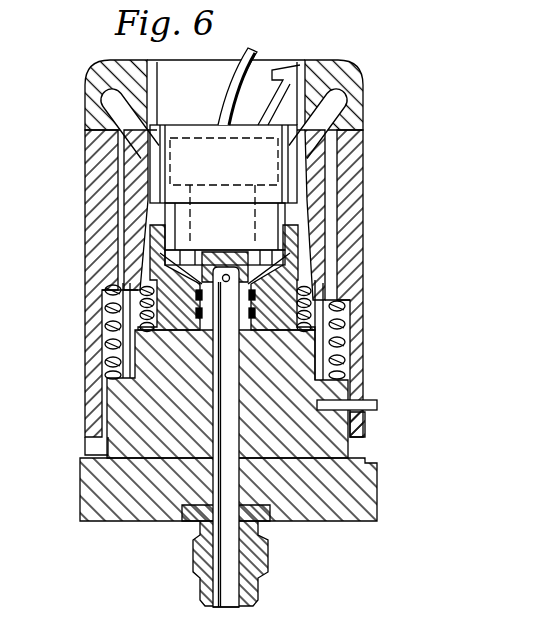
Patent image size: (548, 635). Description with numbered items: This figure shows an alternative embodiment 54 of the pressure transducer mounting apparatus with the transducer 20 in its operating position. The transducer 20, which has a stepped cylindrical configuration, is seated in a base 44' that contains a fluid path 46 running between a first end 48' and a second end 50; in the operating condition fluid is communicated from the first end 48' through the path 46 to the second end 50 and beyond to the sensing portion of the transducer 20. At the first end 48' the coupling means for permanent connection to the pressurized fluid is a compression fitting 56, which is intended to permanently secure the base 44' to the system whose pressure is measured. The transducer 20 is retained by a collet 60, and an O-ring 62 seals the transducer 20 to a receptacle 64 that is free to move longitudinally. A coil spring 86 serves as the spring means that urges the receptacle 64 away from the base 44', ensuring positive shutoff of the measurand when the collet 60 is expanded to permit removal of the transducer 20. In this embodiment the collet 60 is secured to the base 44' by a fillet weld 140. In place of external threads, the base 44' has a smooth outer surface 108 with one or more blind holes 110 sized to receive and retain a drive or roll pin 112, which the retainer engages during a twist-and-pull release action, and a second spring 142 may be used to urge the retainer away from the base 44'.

The transducer 20 is at (274, 78).
The base 44' is at (196, 314).
The fluid path 46 is at (236, 413).
The first end 48' is at (195, 617).
The second end 50 is at (325, 268).
The alternative embodiment of apparatus 54 is at (150, 525).
The compression fitting 56 is at (265, 561).
The collet 60 is at (132, 200).
The O-ring 62 is at (122, 245).
The receptacle 64 is at (120, 267).
The coil spring 86 is at (330, 292).
The smooth outer surface 108 is at (97, 444).
The blind hole 110 is at (374, 402).
The roll pin 112 is at (379, 412).
The fillet weld 140 is at (338, 368).
The second spring 142 is at (344, 331).